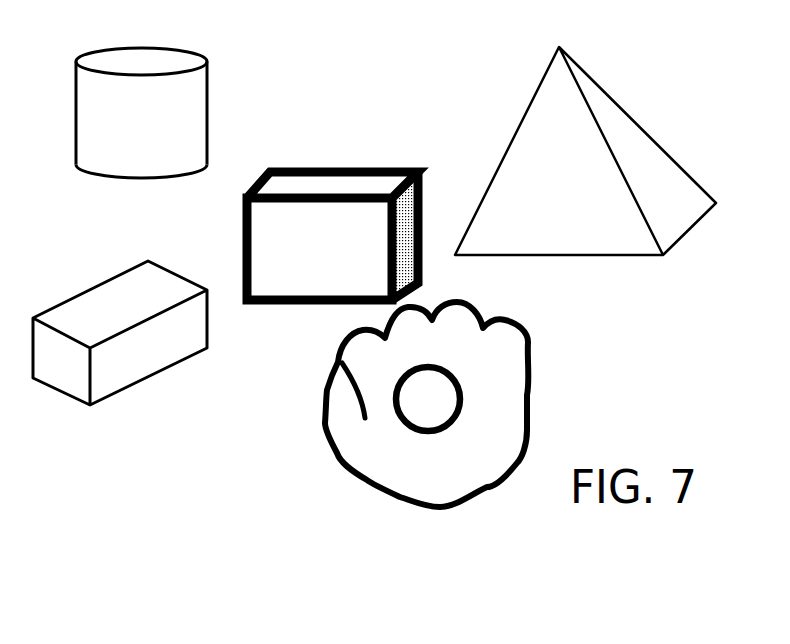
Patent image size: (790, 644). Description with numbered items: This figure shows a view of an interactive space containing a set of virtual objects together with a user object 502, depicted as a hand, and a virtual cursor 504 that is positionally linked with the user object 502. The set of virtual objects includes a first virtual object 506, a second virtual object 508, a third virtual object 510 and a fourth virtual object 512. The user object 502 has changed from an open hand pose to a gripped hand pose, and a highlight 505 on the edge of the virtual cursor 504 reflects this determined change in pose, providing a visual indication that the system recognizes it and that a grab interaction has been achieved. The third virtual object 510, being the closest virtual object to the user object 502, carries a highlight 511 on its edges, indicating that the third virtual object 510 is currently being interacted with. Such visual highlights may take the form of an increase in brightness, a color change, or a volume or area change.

The user object 502 is at (357, 472).
The virtual cursor 504 is at (425, 405).
The highlight of virtual cursor 505 is at (460, 380).
The first virtual object 506 is at (98, 170).
The second virtual object 508 is at (148, 368).
The third virtual object 510 is at (320, 168).
The highlight of third virtual object 511 is at (415, 168).
The fourth virtual object 512 is at (667, 257).